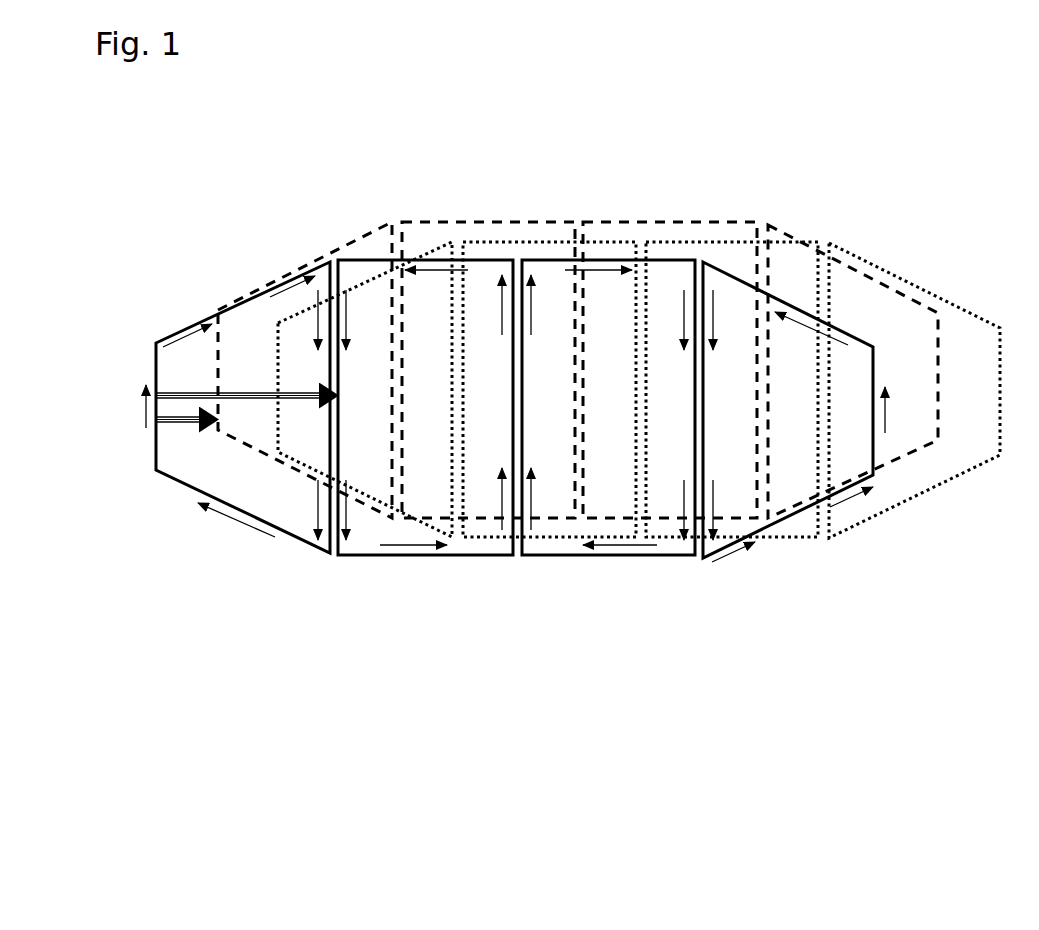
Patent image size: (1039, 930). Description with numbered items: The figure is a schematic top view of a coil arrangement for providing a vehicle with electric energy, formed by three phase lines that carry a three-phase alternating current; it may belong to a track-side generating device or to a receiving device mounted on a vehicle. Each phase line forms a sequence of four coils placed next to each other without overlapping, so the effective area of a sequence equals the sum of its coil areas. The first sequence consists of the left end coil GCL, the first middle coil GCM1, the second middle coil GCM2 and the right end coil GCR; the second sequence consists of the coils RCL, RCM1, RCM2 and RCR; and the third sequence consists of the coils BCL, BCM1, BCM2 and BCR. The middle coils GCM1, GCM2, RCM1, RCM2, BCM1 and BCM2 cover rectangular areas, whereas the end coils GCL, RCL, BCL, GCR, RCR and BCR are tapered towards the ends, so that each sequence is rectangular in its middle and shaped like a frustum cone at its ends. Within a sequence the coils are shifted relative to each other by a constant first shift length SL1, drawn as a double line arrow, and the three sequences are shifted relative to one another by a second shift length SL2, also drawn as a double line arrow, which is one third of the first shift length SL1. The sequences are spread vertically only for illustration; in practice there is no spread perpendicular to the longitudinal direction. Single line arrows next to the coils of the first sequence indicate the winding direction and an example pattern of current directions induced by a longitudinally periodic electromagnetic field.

The left end coil of sequence G GCL is at (170, 478).
The left end coil of sequence R RCL is at (280, 278).
The left end coil of sequence B BCL is at (303, 475).
The first shift length SL1 is at (190, 392).
The second shift length SL2 is at (170, 423).
The first middle coil of sequence G GCM1 is at (355, 555).
The first middle coil of sequence R RCM1 is at (410, 221).
The first middle coil of sequence B BCM1 is at (467, 537).
The second middle coil of sequence G GCM2 is at (523, 557).
The second middle coil of sequence R RCM2 is at (590, 221).
The second middle coil of sequence B BCM2 is at (658, 538).
The right end coil of sequence G GCR is at (763, 528).
The right end coil of sequence R RCR is at (895, 290).
The right end coil of sequence B BCR is at (975, 478).